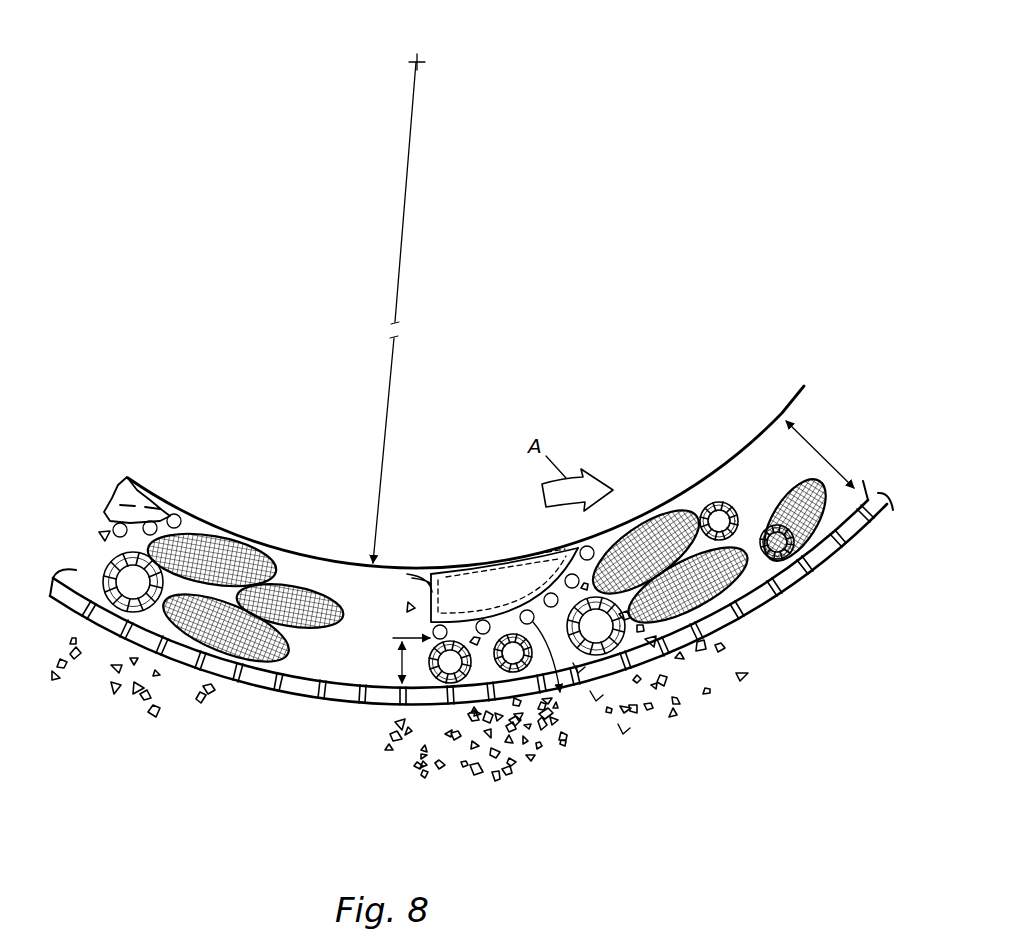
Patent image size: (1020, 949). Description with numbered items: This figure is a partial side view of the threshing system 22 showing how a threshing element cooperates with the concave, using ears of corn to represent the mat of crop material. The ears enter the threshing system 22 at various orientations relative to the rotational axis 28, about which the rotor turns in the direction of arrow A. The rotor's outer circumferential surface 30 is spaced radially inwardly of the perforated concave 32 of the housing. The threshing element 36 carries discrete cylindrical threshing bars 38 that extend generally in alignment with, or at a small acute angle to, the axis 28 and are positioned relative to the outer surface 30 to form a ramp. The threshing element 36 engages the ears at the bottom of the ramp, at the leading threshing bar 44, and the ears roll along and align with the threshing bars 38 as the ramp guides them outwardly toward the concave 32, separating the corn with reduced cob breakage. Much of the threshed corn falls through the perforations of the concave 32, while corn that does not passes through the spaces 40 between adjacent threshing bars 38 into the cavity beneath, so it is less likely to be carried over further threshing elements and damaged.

The threshing system 22 is at (647, 289).
The rotational axis 28 is at (420, 60).
The outer circumferential surface 30 is at (800, 399).
The perforated concave 32 is at (790, 593).
The threshing element 36 is at (410, 592).
The threshing bars 38 is at (533, 590).
The spaces 40 is at (532, 585).
The leading threshing bar 44 is at (592, 560).